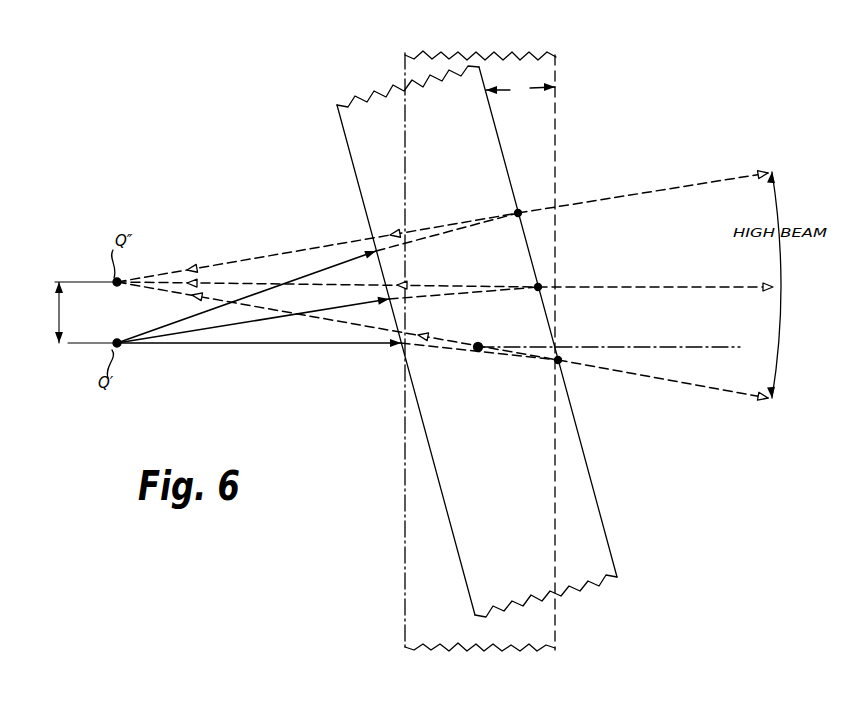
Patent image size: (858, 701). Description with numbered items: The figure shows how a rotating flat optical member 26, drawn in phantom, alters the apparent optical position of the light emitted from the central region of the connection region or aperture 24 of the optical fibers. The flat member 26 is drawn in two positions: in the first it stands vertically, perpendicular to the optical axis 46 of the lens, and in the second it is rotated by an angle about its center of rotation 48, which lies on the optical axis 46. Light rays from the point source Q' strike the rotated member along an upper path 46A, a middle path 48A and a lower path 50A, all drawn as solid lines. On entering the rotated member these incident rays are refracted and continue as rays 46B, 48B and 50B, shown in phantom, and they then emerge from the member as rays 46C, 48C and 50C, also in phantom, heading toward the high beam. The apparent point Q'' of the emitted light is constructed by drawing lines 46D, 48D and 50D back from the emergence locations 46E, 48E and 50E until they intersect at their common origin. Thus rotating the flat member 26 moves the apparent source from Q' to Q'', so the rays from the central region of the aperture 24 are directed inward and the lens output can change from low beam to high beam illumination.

The connection region 24 is at (83, 258).
The flat optical member 26 is at (337, 105).
The optical axis 46 is at (695, 348).
The center of rotation 48 is at (478, 343).
The upper path 46A is at (330, 267).
The refracted ray 46B is at (440, 234).
The emerging ray 46C is at (691, 180).
The construction line 46D is at (232, 260).
The emergence location 46E is at (516, 211).
The middle path 48A is at (277, 318).
The refracted ray 48B is at (510, 291).
The emerging ray 48C is at (656, 285).
The construction line 48D is at (249, 281).
The emergence location 48E is at (535, 284).
The lower path 50A is at (365, 346).
The refracted ray 50B is at (448, 350).
The emerging ray 50C is at (705, 390).
The construction line 50D is at (170, 292).
The emergence location 50E is at (556, 364).